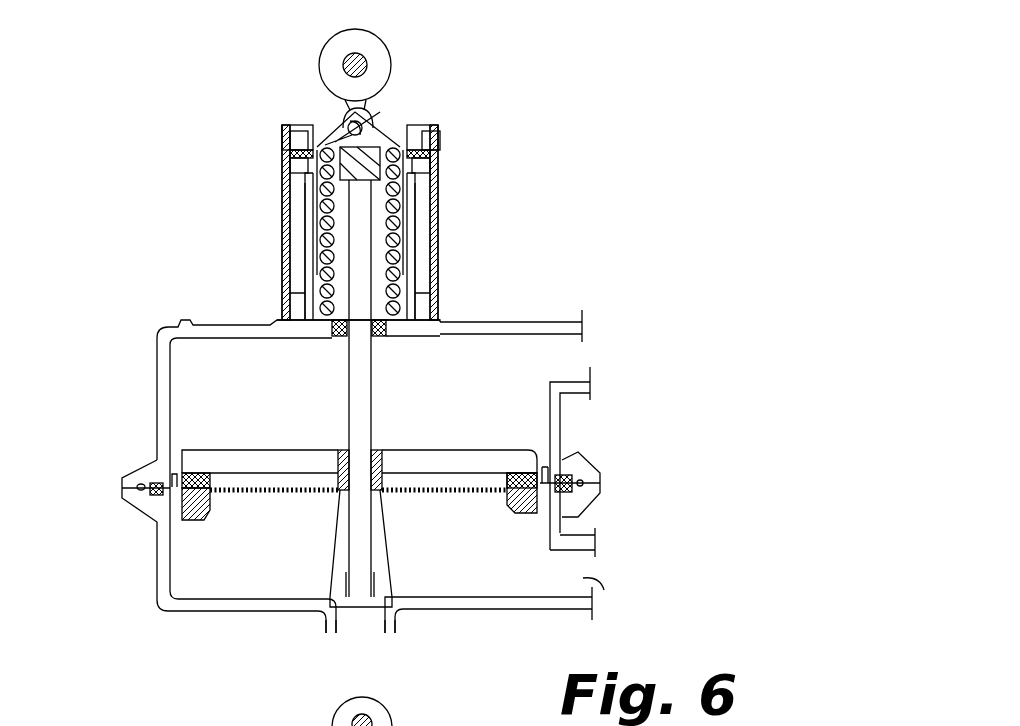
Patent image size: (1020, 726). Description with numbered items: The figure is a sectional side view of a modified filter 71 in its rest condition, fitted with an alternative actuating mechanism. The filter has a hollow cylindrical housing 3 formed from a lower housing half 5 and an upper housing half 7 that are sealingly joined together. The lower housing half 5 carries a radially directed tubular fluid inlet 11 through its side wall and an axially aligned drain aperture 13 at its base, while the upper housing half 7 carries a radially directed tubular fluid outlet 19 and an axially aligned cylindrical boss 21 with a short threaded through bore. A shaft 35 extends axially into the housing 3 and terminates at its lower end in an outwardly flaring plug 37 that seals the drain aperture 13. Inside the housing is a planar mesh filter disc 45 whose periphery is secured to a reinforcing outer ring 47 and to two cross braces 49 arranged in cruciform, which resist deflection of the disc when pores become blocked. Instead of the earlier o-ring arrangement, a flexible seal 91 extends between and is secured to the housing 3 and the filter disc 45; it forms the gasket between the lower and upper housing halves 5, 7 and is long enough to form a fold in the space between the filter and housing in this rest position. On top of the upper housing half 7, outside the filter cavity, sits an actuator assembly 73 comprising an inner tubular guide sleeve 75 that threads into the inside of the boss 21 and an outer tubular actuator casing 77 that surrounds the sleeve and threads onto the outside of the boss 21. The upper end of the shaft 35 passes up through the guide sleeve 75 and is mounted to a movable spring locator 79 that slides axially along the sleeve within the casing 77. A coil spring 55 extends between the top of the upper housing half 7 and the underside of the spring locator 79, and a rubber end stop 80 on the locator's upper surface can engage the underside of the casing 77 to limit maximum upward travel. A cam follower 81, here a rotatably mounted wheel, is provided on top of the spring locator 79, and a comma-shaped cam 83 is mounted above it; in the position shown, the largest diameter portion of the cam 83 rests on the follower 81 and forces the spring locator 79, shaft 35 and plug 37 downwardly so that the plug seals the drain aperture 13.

The housing 3 is at (118, 401).
The lower housing half 5 is at (160, 587).
The upper housing half 7 is at (165, 330).
The fluid inlet 11 is at (583, 578).
The drain aperture 13 is at (368, 617).
The fluid outlet 19 is at (560, 357).
The boss 21 is at (418, 310).
The shaft 35 is at (357, 414).
The plug 37 is at (383, 557).
The filter disc 45 is at (313, 492).
The outer ring 47 is at (190, 520).
The cross braces 49 is at (251, 465).
The coil spring 55 is at (323, 274).
The modified filter 71 is at (548, 193).
The actuator assembly 73 is at (253, 134).
The guide sleeve 75 is at (303, 216).
The actuator casing 77 is at (297, 128).
The spring locator 79 is at (390, 125).
The rubber end stop 80 is at (420, 146).
The cam follower 81 is at (372, 108).
The cam 83 is at (385, 42).
The flexible seal 91 is at (577, 452).